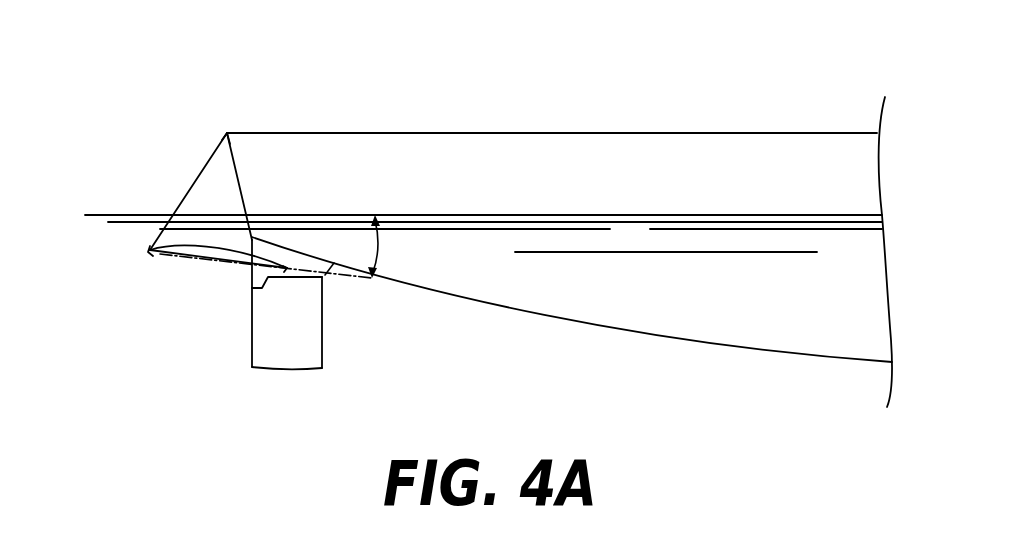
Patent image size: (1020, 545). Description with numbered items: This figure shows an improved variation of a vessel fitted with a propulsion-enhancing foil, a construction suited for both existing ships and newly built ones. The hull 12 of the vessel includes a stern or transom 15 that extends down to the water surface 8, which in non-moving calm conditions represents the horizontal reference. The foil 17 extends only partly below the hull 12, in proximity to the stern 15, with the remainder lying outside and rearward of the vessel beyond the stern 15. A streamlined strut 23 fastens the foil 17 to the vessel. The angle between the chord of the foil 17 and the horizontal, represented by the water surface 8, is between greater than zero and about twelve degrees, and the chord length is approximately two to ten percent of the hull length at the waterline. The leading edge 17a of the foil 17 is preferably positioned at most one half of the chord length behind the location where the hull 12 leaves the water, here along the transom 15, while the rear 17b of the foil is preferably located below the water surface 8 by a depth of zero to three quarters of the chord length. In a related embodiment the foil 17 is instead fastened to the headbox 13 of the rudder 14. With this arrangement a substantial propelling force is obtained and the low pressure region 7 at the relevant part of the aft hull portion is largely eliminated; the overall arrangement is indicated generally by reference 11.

The low pressure region 7 is at (436, 313).
The water surface 8 is at (453, 214).
The propulsion assembly 11 is at (336, 93).
The hull 12 is at (672, 150).
The headbox 13 is at (325, 266).
The rudder 14 is at (298, 358).
The stern or transom 15 is at (233, 161).
The foil 17 is at (200, 255).
The leading edge 17a is at (283, 270).
The rear of the foil 17b is at (151, 251).
The streamlined strut 23 is at (212, 198).